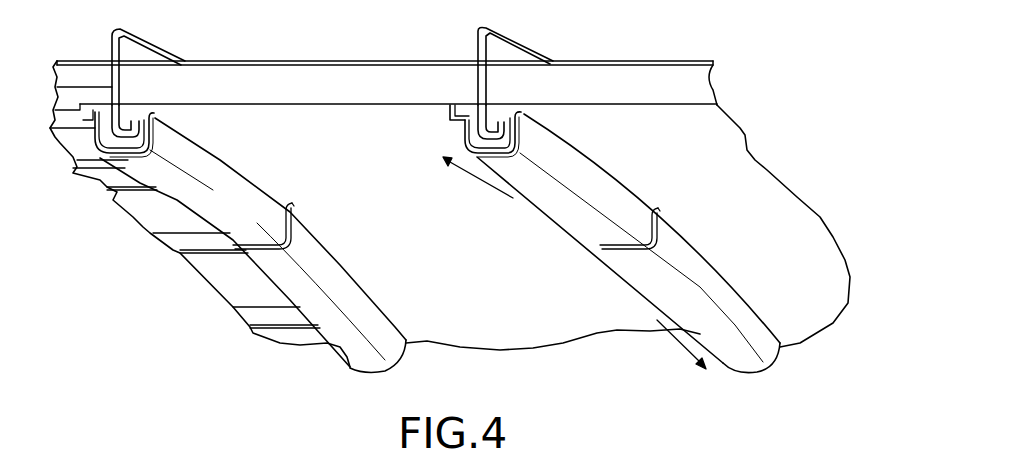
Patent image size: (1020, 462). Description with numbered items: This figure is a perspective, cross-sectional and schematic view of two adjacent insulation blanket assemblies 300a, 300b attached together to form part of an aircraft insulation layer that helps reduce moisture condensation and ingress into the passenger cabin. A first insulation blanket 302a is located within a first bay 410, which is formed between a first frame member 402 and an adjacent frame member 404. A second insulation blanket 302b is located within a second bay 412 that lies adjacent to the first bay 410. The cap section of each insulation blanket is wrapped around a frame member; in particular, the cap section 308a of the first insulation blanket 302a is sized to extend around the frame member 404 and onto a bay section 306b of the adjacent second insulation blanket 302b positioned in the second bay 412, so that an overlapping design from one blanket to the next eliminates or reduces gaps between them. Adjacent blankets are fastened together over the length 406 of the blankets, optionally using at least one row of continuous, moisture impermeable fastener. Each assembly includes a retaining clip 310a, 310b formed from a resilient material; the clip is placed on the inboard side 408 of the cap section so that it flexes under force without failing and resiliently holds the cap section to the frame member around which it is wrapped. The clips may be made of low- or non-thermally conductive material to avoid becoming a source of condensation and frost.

The first insulation blanket assembly 300a is at (778, 381).
The second insulation blanket assembly 300b is at (253, 249).
The first insulation blanket 302a is at (776, 229).
The second insulation blanket 302b is at (375, 221).
The bay section 306b is at (538, 308).
The cap section 308a is at (458, 108).
The first retaining clip 310a is at (516, 90).
The second retaining clip 310b is at (152, 121).
The first frame member 402 is at (152, 42).
The adjacent frame member 404 is at (525, 44).
The length 406 is at (681, 340).
The inboard side 408 is at (254, 217).
The first bay 410 is at (391, 64).
The second bay 412 is at (363, 54).